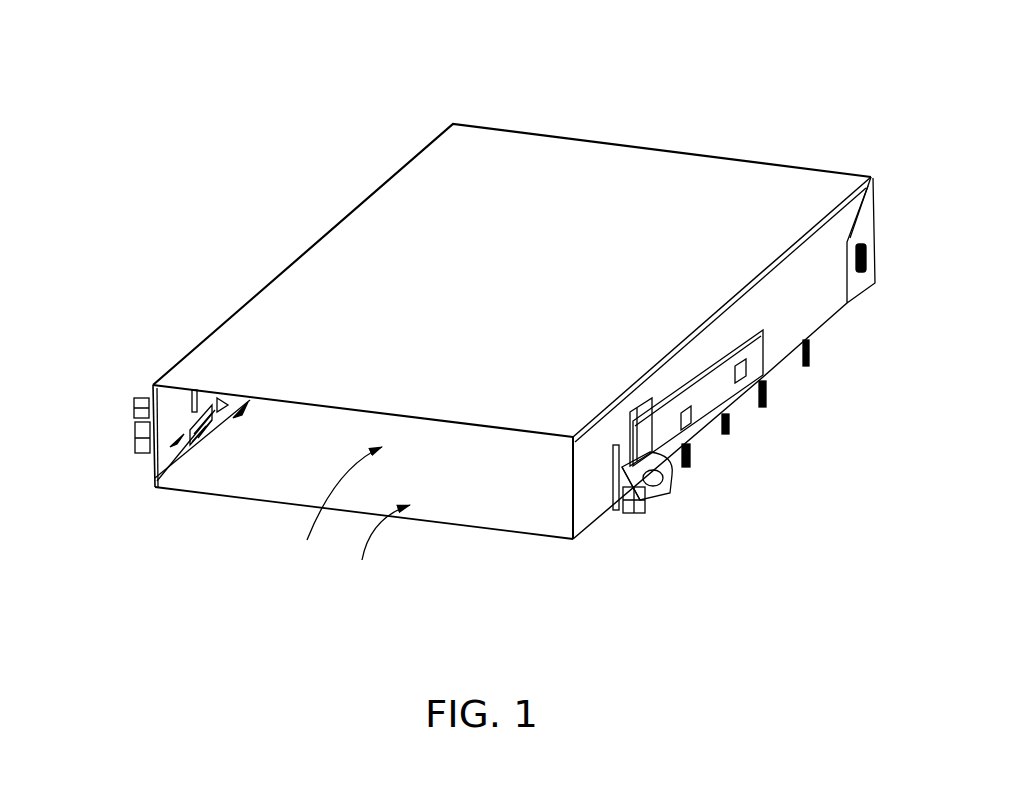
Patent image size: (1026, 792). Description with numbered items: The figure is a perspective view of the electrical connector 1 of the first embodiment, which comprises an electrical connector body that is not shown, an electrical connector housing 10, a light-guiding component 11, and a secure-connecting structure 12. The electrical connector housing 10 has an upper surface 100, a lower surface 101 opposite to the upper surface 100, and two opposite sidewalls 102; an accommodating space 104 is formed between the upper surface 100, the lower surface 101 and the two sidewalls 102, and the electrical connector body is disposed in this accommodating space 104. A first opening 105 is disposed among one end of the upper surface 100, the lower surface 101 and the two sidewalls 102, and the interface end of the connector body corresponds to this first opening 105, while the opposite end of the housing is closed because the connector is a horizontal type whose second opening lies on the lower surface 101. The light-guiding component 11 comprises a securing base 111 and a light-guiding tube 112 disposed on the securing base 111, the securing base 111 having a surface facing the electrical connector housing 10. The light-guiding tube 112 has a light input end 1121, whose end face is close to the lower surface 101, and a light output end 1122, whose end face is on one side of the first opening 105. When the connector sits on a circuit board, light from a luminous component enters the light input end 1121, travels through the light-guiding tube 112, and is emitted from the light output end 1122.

The electrical connector 1 is at (288, 128).
The electrical connector housing 10 is at (301, 251).
The upper surface 100 is at (535, 180).
The lower surface 101 is at (250, 485).
The sidewalls 102 is at (157, 420).
The accommodating space 104 is at (321, 508).
The first opening 105 is at (375, 555).
The light-guiding component 11 is at (135, 402).
The securing base 111 is at (670, 490).
The light-guiding tube 112 is at (675, 462).
The light input end 1121 is at (667, 490).
The light output end 1122 is at (613, 502).
The secure-connecting structure 12 is at (148, 473).